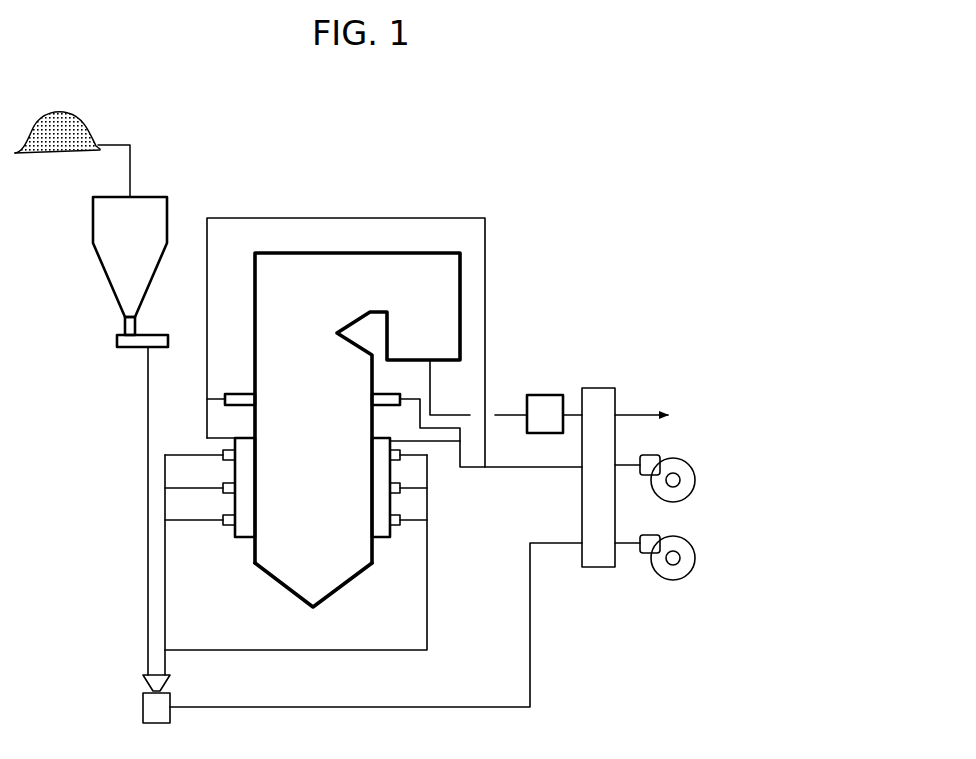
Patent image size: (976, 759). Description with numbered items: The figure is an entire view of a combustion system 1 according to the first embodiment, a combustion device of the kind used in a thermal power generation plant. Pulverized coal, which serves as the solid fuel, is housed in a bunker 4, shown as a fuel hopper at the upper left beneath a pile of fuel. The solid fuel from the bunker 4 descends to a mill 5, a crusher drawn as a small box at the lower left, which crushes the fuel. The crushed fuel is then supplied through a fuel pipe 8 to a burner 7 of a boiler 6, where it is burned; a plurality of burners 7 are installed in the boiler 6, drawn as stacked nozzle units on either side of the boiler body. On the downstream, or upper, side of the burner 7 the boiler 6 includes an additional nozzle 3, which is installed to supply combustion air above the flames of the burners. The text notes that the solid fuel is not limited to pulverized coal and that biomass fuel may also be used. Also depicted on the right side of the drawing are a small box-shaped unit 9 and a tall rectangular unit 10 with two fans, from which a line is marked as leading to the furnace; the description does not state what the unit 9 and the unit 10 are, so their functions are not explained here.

The combustion system 1 is at (547, 145).
The additional nozzle 3 is at (245, 393).
The bunker 4 is at (146, 197).
The mill 5 is at (143, 707).
The boiler 6 is at (400, 253).
The burner 7 is at (223, 490).
The fuel pipe 8 is at (167, 583).
The valve 9 is at (545, 395).
The fan unit 10 is at (582, 495).